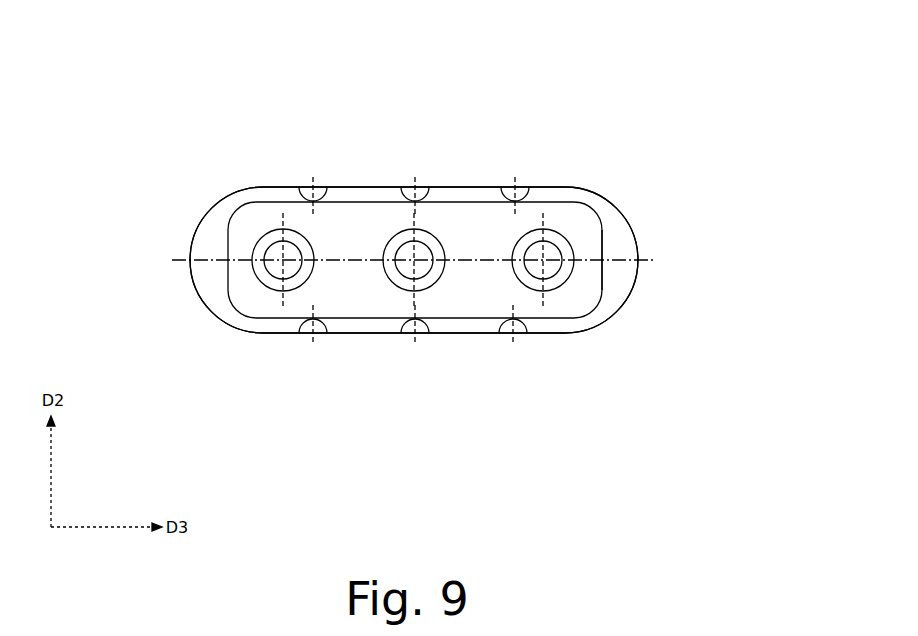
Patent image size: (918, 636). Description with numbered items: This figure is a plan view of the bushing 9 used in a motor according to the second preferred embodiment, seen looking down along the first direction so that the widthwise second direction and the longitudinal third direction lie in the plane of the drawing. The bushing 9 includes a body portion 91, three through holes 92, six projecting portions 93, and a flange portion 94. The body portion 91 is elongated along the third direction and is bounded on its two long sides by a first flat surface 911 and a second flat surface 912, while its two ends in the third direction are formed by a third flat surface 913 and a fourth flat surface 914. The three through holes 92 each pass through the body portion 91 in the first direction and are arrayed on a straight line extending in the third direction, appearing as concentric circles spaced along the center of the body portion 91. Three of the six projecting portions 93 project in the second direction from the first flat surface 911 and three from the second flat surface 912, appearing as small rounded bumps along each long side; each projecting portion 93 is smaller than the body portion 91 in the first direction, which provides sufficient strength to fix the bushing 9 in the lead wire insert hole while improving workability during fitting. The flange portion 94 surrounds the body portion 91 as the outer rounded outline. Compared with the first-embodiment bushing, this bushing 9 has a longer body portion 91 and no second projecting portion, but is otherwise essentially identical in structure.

The bushing 9 is at (438, 206).
The body portion 91 is at (612, 296).
The first flat surface 911 is at (268, 333).
The second flat surface 912 is at (268, 190).
The third flat surface 913 is at (228, 240).
The fourth flat surface 914 is at (602, 243).
The through hole 92 is at (305, 282).
The projecting portion 93 is at (308, 188).
The flange portion 94 is at (640, 272).